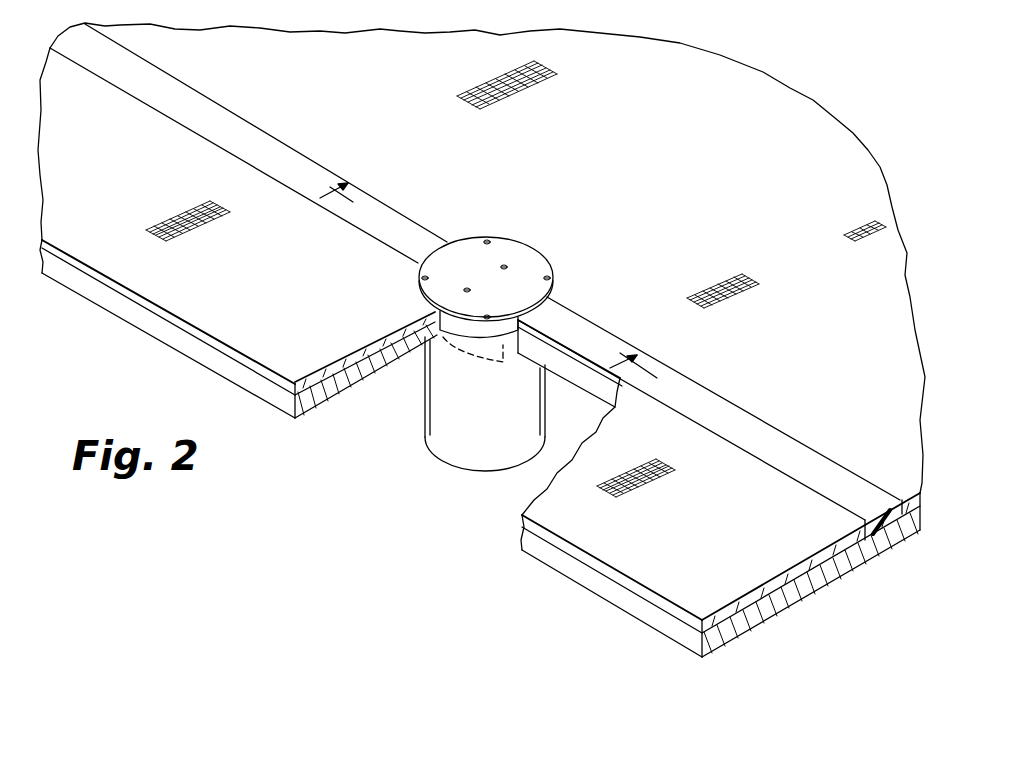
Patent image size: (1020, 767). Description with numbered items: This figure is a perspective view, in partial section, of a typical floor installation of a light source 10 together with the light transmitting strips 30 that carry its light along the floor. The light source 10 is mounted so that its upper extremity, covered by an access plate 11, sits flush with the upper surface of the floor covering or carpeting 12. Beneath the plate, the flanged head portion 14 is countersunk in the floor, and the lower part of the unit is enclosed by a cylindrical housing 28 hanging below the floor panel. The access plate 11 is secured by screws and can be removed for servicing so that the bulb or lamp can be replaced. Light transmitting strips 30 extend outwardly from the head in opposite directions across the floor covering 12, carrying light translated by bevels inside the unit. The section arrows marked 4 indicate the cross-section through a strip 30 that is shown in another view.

The light source 10 is at (512, 339).
The access plate 11 is at (533, 260).
The floor covering 12 is at (723, 167).
The head portion 14 is at (503, 362).
The housing 28 is at (458, 447).
The light transmitting strip 30 is at (273, 153).
The section line 4- 4 is at (480, 281).